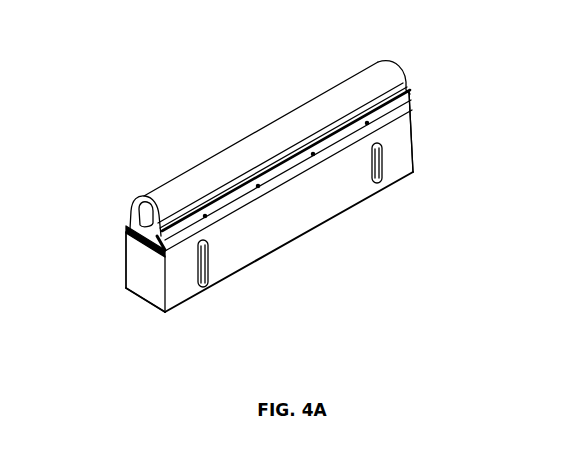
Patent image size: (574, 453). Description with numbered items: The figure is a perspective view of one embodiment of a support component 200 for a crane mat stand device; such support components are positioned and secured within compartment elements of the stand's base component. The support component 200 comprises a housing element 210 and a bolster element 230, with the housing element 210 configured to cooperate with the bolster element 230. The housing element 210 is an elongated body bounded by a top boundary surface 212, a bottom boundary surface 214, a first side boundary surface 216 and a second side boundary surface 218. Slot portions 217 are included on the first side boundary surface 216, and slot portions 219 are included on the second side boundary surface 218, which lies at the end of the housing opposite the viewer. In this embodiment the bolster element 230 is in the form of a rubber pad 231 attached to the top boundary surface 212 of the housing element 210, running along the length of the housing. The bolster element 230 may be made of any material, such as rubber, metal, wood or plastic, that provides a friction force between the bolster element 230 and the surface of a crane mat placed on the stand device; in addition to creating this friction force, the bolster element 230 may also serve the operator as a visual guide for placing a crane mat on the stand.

The support component 200 is at (201, 35).
The housing element 210 is at (403, 152).
The top boundary surface 212 is at (135, 228).
The bottom boundary surface 214 is at (157, 287).
The first side boundary surface 216 is at (312, 205).
The slot portions 217 is at (381, 178).
The second side boundary surface 218 is at (135, 265).
The slot portions 219 is at (166, 246).
The bolster element 230 is at (377, 80).
The rubber pad 231 is at (323, 102).